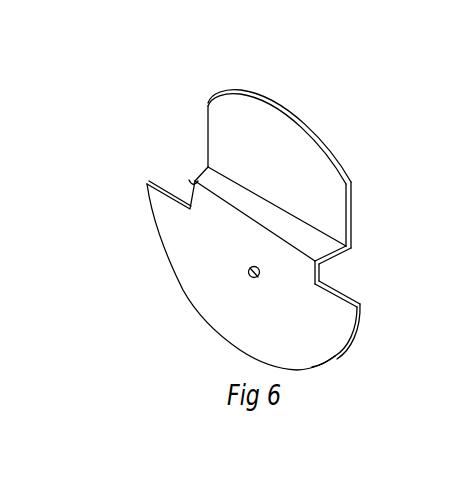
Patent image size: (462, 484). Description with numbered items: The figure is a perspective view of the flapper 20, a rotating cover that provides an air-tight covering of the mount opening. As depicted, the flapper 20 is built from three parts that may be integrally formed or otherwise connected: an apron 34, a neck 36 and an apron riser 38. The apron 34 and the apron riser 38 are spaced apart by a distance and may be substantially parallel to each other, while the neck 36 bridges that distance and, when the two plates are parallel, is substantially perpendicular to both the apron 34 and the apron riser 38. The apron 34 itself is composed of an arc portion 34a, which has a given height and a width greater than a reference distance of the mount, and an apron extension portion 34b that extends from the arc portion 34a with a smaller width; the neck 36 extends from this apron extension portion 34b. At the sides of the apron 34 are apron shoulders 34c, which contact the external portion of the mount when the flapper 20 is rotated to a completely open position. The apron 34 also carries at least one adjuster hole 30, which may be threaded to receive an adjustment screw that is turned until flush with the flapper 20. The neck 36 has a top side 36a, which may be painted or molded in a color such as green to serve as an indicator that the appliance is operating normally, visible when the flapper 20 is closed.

The flapper 20 is at (188, 155).
The adjuster hole 30 is at (249, 272).
The apron 34 is at (177, 241).
The arc portion 34a is at (355, 360).
The apron extension portion 34b is at (328, 278).
The apron shoulder 34c is at (362, 305).
The neck 36 is at (341, 250).
The top side 36a is at (196, 177).
The apron riser 38 is at (326, 193).